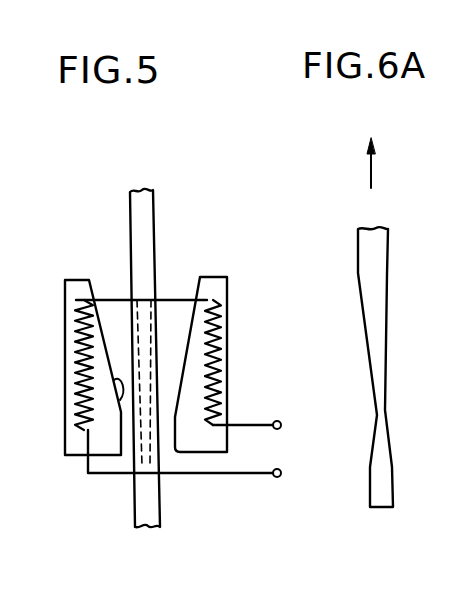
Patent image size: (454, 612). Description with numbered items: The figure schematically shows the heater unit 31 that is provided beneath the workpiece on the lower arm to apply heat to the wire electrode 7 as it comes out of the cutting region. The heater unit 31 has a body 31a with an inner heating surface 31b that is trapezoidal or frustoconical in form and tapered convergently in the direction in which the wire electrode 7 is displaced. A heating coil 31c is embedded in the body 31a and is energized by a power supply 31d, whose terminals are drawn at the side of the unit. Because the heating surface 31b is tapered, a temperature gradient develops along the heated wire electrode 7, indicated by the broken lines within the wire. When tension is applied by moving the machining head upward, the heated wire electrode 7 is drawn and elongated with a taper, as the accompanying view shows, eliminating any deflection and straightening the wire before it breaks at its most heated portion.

In FIG. 5, the wire electrode 7 is at (152, 228).
In FIG. 6A, the wire electrode 7 is at (385, 275).
In FIG. 5, the heater unit 31 is at (60, 263).
In FIG. 5, the body 31a is at (65, 390).
In FIG. 5, the inner heating surface 31b is at (120, 404).
In FIG. 5, the heating coil 31c is at (228, 387).
In FIG. 5, the power supply 31d is at (280, 445).